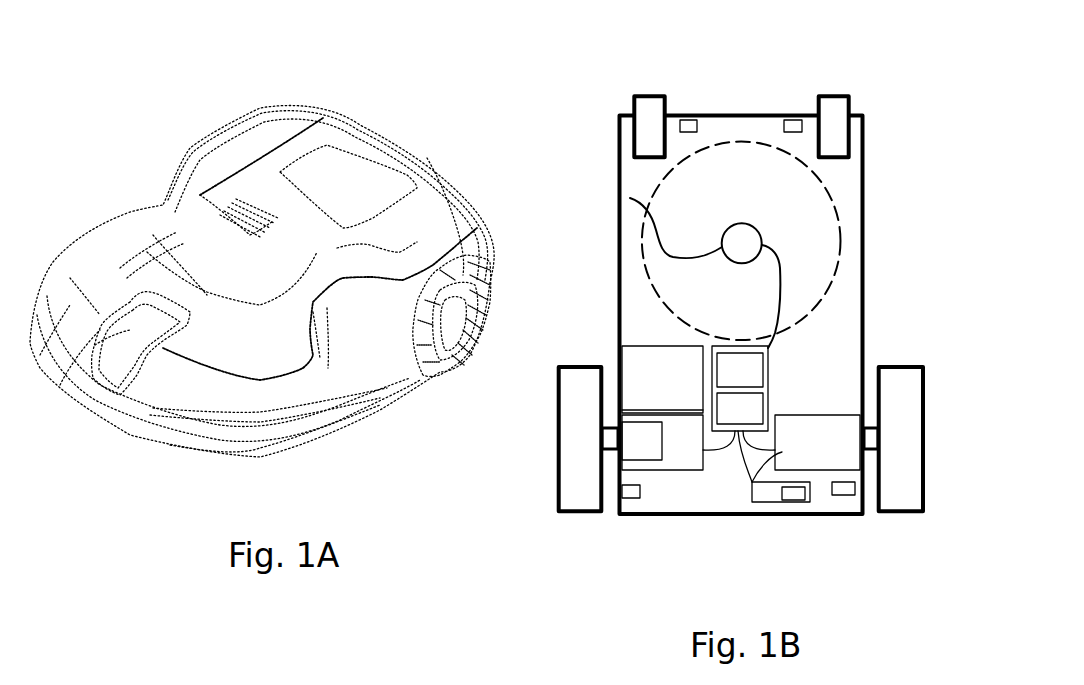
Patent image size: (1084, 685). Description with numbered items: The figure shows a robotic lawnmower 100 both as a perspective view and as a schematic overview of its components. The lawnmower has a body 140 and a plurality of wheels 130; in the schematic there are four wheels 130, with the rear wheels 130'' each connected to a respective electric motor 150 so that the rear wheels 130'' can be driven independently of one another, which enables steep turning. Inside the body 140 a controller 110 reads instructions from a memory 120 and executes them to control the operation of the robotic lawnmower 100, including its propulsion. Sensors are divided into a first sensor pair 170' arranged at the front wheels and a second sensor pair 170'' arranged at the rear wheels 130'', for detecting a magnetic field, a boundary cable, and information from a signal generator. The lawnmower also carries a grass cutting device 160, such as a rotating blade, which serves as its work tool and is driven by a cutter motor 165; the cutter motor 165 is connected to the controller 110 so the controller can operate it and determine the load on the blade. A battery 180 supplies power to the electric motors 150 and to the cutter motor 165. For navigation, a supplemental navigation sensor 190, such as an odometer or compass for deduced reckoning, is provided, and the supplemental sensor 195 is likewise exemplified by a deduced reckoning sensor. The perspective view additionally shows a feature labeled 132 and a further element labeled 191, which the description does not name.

In FIG. 1A, the robotic lawnmower 100 is at (505, 93).
In FIG. 1B, the robotic lawnmower 100 is at (615, 158).
In FIG. 1B, the controller 110 is at (770, 370).
In FIG. 1B, the memory 120 is at (770, 408).
In FIG. 1B, the wheels 130 is at (741, 84).
In FIG. 1A, the rear wheels 130'' is at (452, 354).
In FIG. 1B, the rear wheels 130'' is at (706, 486).
In FIG. 1A, the cutout / slot 132 is at (127, 360).
In FIG. 1A, the body 140 is at (380, 395).
In FIG. 1B, the body 140 is at (637, 470).
In FIG. 1B, the electric motor 150 is at (697, 453).
In FIG. 1B, the grass cutting device 160 is at (650, 280).
In FIG. 1B, the cutter motor 165 is at (630, 198).
In FIG. 1B, the first sensor pair 170' is at (741, 78).
In FIG. 1B, the second sensor pair 170'' is at (727, 546).
In FIG. 1B, the battery 180 is at (633, 367).
In FIG. 1B, the supplemental navigation sensor 190 is at (752, 482).
In FIG. 1B, the antenna 191 is at (802, 502).
In FIG. 1B, the supplemental sensor 195 is at (640, 460).